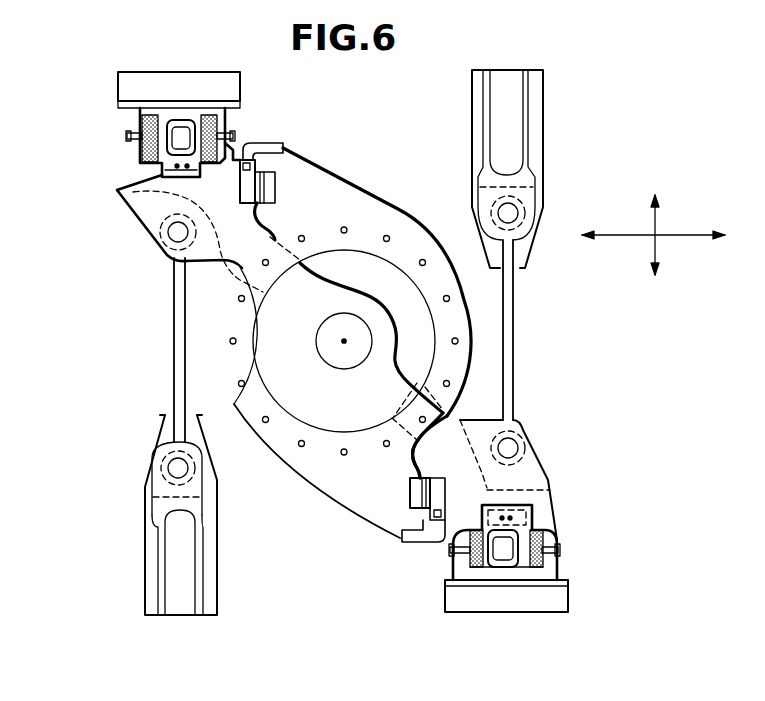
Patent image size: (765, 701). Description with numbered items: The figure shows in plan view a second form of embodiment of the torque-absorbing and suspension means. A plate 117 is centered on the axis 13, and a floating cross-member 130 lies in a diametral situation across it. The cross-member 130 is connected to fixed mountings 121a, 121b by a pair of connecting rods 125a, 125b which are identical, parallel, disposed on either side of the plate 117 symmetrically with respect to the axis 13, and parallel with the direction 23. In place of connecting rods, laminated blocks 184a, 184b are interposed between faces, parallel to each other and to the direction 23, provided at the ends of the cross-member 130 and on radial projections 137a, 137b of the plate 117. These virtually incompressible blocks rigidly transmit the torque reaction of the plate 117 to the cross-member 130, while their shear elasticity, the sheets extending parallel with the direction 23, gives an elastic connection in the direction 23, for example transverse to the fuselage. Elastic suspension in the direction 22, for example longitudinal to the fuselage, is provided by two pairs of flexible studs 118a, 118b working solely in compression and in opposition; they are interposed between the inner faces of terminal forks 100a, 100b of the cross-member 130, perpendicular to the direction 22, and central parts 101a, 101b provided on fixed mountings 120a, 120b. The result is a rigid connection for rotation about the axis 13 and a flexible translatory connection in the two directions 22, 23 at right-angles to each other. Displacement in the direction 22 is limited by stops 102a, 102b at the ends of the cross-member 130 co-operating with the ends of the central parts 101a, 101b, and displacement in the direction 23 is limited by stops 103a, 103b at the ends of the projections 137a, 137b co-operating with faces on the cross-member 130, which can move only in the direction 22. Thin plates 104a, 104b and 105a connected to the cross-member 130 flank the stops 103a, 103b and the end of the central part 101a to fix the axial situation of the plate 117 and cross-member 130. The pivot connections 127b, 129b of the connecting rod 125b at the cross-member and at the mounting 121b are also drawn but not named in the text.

The axis 13 is at (344, 341).
The direction 22 is at (653, 235).
The direction 23 is at (691, 265).
The terminal fork 100a is at (552, 535).
The terminal fork 100b is at (160, 172).
The central part 101a is at (500, 573).
The central part 101b is at (170, 118).
The stop 102a is at (488, 514).
The stop 102b is at (180, 197).
The stop 103a is at (432, 542).
The stop 103b is at (283, 143).
The thin plate 104a is at (457, 470).
The thin plate 104b is at (243, 188).
The thin plate 105a is at (520, 503).
The plate 117 is at (290, 460).
The flexible studs 118a is at (557, 560).
The flexible studs 118b is at (127, 135).
The fixed mounting 120a is at (545, 614).
The fixed mounting 120b is at (125, 73).
The fixed mounting 121a is at (547, 102).
The fixed mounting 121b is at (142, 547).
The connecting rod 125a is at (513, 342).
The connecting rod 125b is at (176, 348).
The pivot 127b is at (170, 233).
The pivot 129b is at (170, 478).
The floating cross-member 130 is at (318, 274).
The radial projection 137a is at (390, 513).
The radial projection 137b is at (327, 187).
The laminated block 184a is at (410, 462).
The laminated block 184b is at (262, 162).